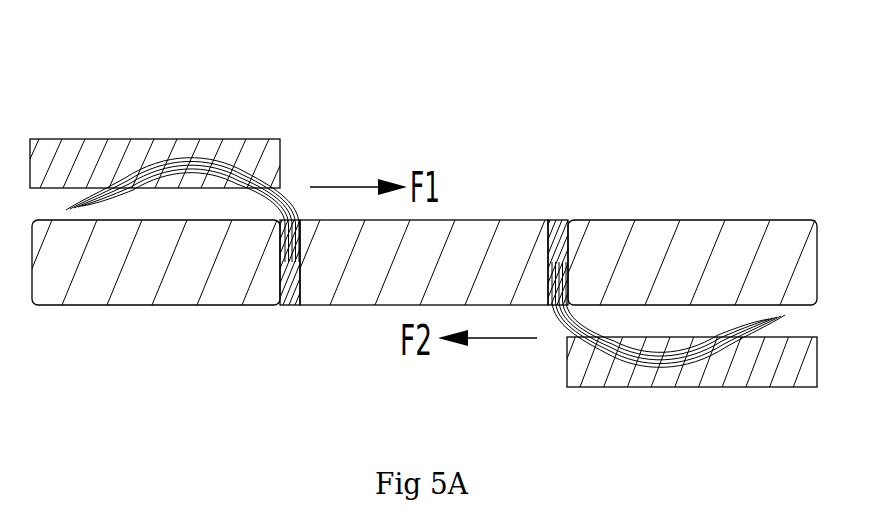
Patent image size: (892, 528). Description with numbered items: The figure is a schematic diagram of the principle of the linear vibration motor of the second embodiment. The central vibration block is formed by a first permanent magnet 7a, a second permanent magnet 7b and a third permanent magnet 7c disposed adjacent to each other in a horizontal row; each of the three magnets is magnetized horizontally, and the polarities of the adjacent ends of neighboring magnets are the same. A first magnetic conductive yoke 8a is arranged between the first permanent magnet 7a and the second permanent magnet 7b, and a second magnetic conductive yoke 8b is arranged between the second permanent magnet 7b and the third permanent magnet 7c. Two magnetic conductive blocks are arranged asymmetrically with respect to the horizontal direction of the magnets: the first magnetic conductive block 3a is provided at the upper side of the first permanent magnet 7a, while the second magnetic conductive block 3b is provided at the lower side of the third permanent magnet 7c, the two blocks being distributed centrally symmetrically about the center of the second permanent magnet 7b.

The first permanent magnet 7a is at (148, 154).
The first magnetic conductive block 3a is at (158, 101).
The first magnetic conductive yoke 8a is at (322, 173).
The second permanent magnet 7b is at (416, 172).
The second magnetic conductive yoke 8b is at (588, 174).
The third permanent magnet 7c is at (686, 175).
The second magnetic conductive block 3b is at (686, 394).